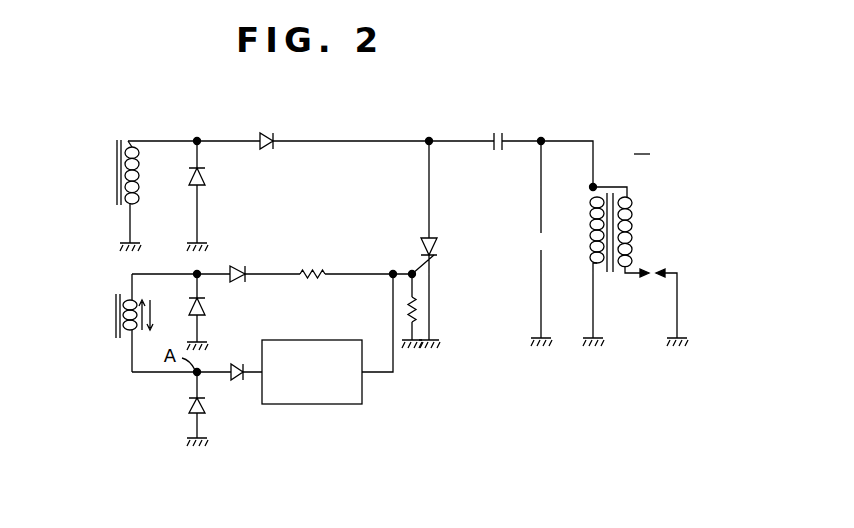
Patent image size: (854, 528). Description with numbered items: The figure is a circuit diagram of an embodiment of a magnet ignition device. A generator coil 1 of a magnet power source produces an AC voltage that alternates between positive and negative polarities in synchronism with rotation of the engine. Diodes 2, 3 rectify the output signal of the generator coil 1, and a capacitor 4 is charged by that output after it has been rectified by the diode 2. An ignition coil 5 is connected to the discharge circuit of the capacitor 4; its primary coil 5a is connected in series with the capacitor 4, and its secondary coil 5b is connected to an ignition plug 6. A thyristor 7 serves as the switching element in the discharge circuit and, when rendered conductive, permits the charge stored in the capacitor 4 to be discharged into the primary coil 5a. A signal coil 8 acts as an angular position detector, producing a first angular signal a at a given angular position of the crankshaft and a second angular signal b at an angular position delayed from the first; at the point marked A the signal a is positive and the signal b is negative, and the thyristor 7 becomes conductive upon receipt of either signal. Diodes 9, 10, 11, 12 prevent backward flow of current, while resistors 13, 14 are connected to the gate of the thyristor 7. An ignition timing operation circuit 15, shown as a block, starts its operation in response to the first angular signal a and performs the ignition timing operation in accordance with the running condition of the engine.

The generator coil 1 is at (110, 178).
The diode 2 is at (268, 130).
The diode 3 is at (205, 178).
The capacitor 4 is at (494, 154).
The ignition coil 5 is at (605, 183).
The primary coil 5a is at (590, 230).
The secondary coil 5b is at (633, 231).
The ignition plug 6 is at (656, 268).
The thyristor 7 is at (440, 254).
The signal coil 8 is at (117, 345).
The diode 9 is at (236, 264).
The diode 10 is at (205, 308).
The diode 11 is at (237, 388).
The diode 12 is at (185, 405).
The resistor 13 is at (308, 268).
The resistor 14 is at (415, 312).
The ignition timing operation circuit 15 is at (313, 397).